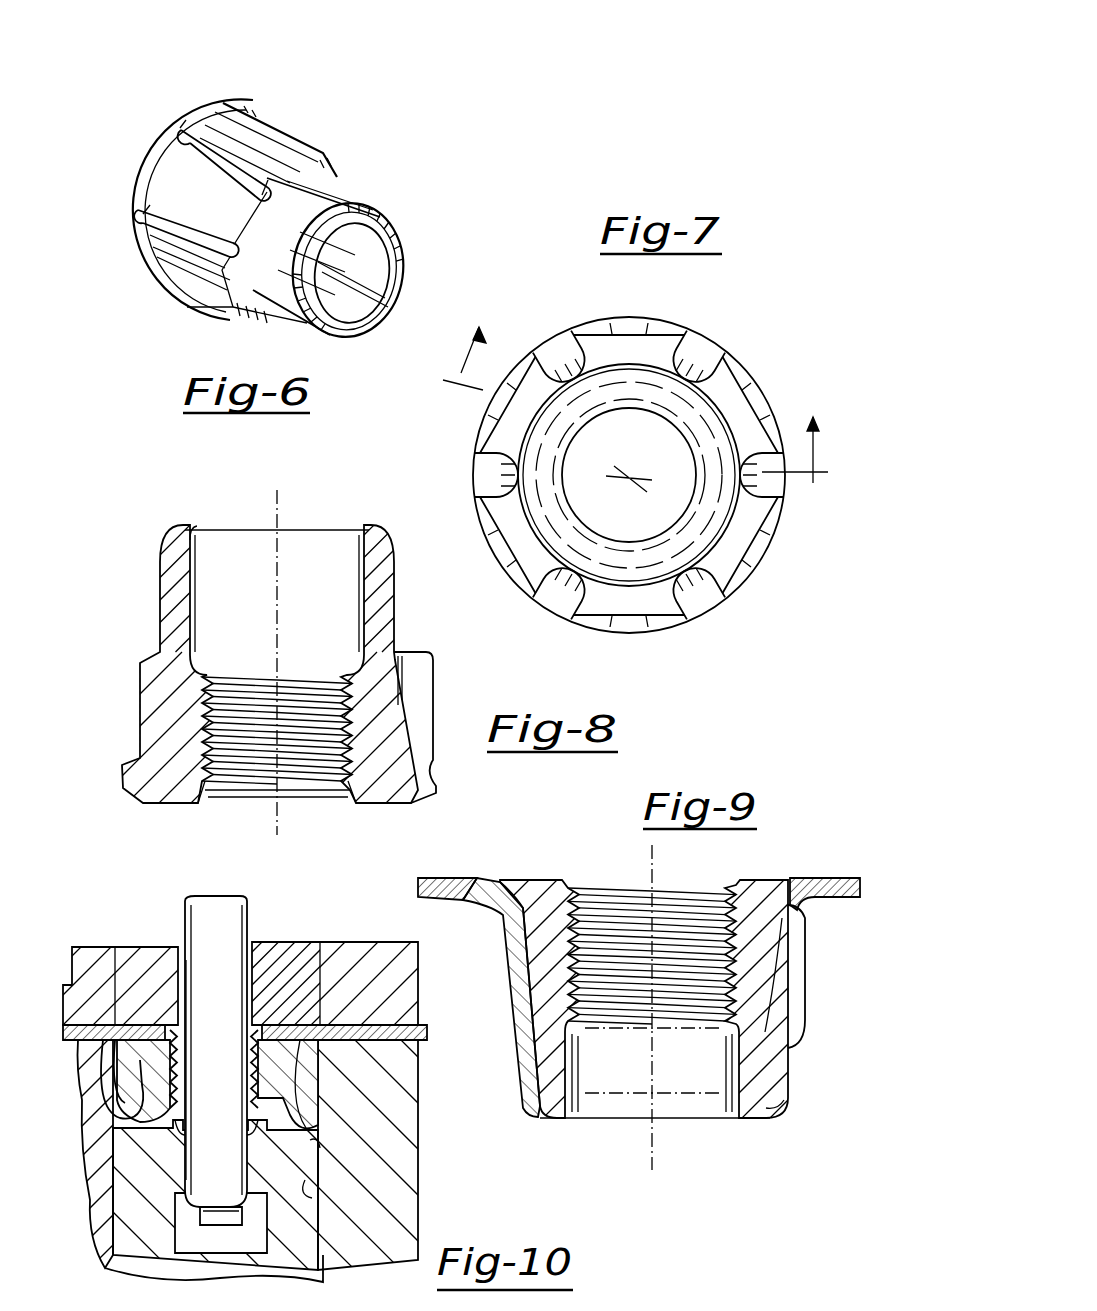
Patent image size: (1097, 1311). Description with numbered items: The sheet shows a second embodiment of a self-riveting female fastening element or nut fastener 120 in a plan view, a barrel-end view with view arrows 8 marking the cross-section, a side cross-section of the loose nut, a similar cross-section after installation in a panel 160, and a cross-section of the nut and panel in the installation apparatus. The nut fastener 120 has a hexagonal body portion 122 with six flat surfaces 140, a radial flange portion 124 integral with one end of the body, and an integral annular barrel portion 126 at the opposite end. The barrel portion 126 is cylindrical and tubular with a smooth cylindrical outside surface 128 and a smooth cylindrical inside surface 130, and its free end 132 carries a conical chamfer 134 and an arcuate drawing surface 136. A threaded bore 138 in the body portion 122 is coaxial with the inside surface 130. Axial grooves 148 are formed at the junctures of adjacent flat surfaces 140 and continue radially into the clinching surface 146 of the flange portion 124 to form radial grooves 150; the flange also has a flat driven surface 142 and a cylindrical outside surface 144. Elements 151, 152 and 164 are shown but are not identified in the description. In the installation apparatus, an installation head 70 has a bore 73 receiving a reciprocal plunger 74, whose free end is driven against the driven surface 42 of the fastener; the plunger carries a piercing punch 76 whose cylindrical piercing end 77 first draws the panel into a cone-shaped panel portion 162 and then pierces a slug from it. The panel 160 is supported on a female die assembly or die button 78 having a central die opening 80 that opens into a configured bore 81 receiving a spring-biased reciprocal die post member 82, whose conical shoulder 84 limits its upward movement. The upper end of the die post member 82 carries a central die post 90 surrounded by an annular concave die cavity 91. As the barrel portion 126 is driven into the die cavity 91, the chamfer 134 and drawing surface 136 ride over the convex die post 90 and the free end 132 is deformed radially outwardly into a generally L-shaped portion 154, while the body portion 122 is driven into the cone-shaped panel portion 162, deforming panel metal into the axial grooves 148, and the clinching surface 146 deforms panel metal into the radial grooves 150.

In FIG. 7, the view arrows 8 is at (635, 389).
In FIG. 10, the driven surface 42 is at (188, 1000).
In FIG. 10, the installation head 70 is at (105, 962).
In FIG. 10, the bore 73 is at (143, 947).
In FIG. 10, the reciprocal plunger 74 is at (265, 942).
In FIG. 10, the piercing punch 76 is at (201, 934).
In FIG. 10, the cylindrical piercing end 77 is at (215, 1218).
In FIG. 10, the female die assembly 78 is at (431, 1198).
In FIG. 10, the central die opening 80 is at (112, 1076).
In FIG. 10, the configured bore 81 is at (320, 1142).
In FIG. 10, the reciprocal die post member 82 is at (293, 1232).
In FIG. 10, the conical shoulder 84 is at (323, 1192).
In FIG. 10, the central die post 90 is at (182, 1126).
In FIG. 10, the annular concave die cavity 91 is at (253, 1163).
In FIG. 6, the self-riveting female fastening element 120 is at (380, 152).
In FIG. 8, the self-riveting female fastening element 120 is at (153, 533).
In FIG. 9, the self-riveting female fastening element 120 is at (586, 1130).
In FIG. 10, the self-riveting female fastening element 120 is at (283, 1014).
In FIG. 6, the body portion 122 is at (236, 124).
In FIG. 7, the body portion 122 is at (722, 392).
In FIG. 8, the body portion 122 is at (153, 668).
In FIG. 9, the body portion 122 is at (527, 1023).
In FIG. 6, the radial flange portion 124 is at (270, 94).
In FIG. 7, the radial flange portion 124 is at (781, 535).
In FIG. 8, the radial flange portion 124 is at (128, 792).
In FIG. 9, the radial flange portion 124 is at (523, 884).
In FIG. 6, the barrel portion 126 is at (392, 200).
In FIG. 7, the barrel portion 126 is at (540, 437).
In FIG. 8, the barrel portion 126 is at (383, 621).
In FIG. 9, the barrel portion 126 is at (536, 1122).
In FIG. 6, the outside surface 128 is at (268, 322).
In FIG. 8, the outside surface 128 is at (160, 587).
In FIG. 6, the inside surface 130 is at (375, 300).
In FIG. 7, the inside surface 130 is at (629, 475).
In FIG. 8, the inside surface 130 is at (192, 546).
In FIG. 9, the inside surface 130 is at (600, 1077).
In FIG. 6, the free end 132 is at (407, 252).
In FIG. 8, the free end 132 is at (322, 526).
In FIG. 9, the free end 132 is at (779, 1106).
In FIG. 8, the conical chamfer 134 is at (262, 524).
In FIG. 8, the arcuate drawing surface 136 is at (391, 546).
In FIG. 8, the threaded bore 138 is at (229, 790).
In FIG. 9, the threaded bore 138 is at (627, 893).
In FIG. 10, the threaded bore 138 is at (214, 1069).
In FIG. 6, the flat surfaces 140 is at (316, 140).
In FIG. 7, the flat surfaces 140 is at (628, 322).
In FIG. 8, the flat driven surface 142 is at (347, 806).
In FIG. 6, the cylindrical outside surface 144 is at (162, 142).
In FIG. 7, the cylindrical outside surface 144 is at (492, 562).
In FIG. 8, the cylindrical outside surface 144 is at (120, 777).
In FIG. 6, the clinching surface 146 is at (146, 186).
In FIG. 7, the clinching surface 146 is at (648, 628).
In FIG. 8, the clinching surface 146 is at (126, 758).
In FIG. 9, the clinching surface 146 is at (781, 880).
In FIG. 6, the axial grooves 148 is at (267, 200).
In FIG. 7, the axial grooves 148 is at (484, 482).
In FIG. 8, the axial grooves 148 is at (406, 720).
In FIG. 9, the axial grooves 148 is at (808, 968).
In FIG. 6, the radial grooves 150 is at (142, 215).
In FIG. 7, the radial grooves 150 is at (564, 348).
In FIG. 8, the radial grooves 150 is at (438, 783).
In FIG. 9, the radial grooves 150 is at (503, 930).
In FIG. 8, the axis 151 is at (282, 579).
In FIG. 7, the notch 152 is at (692, 348).
In FIG. 9, the L-shaped portion 154 is at (774, 1120).
In FIG. 9, the panel 160 is at (437, 884).
In FIG. 10, the panel 160 is at (428, 1036).
In FIG. 9, the cone-shaped panel portion 162 is at (505, 992).
In FIG. 9, the collar end 164 is at (528, 1111).